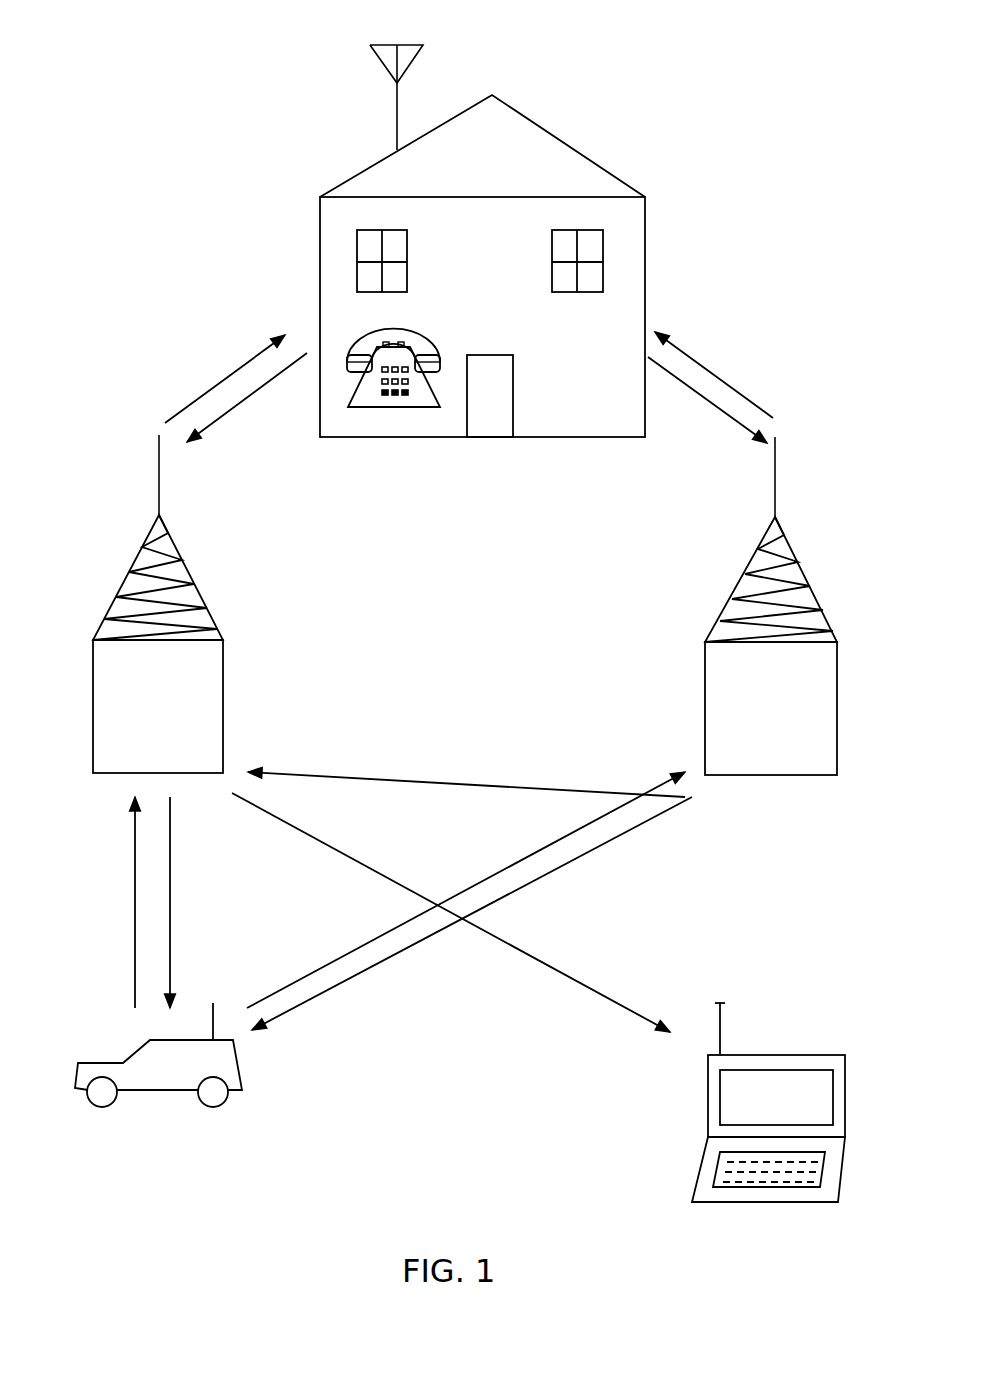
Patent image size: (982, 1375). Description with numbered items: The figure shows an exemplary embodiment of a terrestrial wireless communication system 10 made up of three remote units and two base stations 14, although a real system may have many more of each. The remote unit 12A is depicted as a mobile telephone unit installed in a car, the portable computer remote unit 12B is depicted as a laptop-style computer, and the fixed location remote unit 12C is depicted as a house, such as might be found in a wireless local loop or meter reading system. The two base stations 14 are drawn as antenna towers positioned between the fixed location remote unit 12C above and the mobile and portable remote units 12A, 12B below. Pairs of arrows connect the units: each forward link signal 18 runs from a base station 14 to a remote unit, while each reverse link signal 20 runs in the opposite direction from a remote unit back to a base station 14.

The terrestrial wireless communication system 10 is at (793, 34).
The remote unit 12A is at (102, 1062).
The portable computer remote unit 12B is at (820, 1053).
The fixed location remote unit 12C is at (550, 131).
The base station 14 is at (127, 573).
The forward link signal 18 is at (240, 363).
The reverse link signal 20 is at (258, 392).